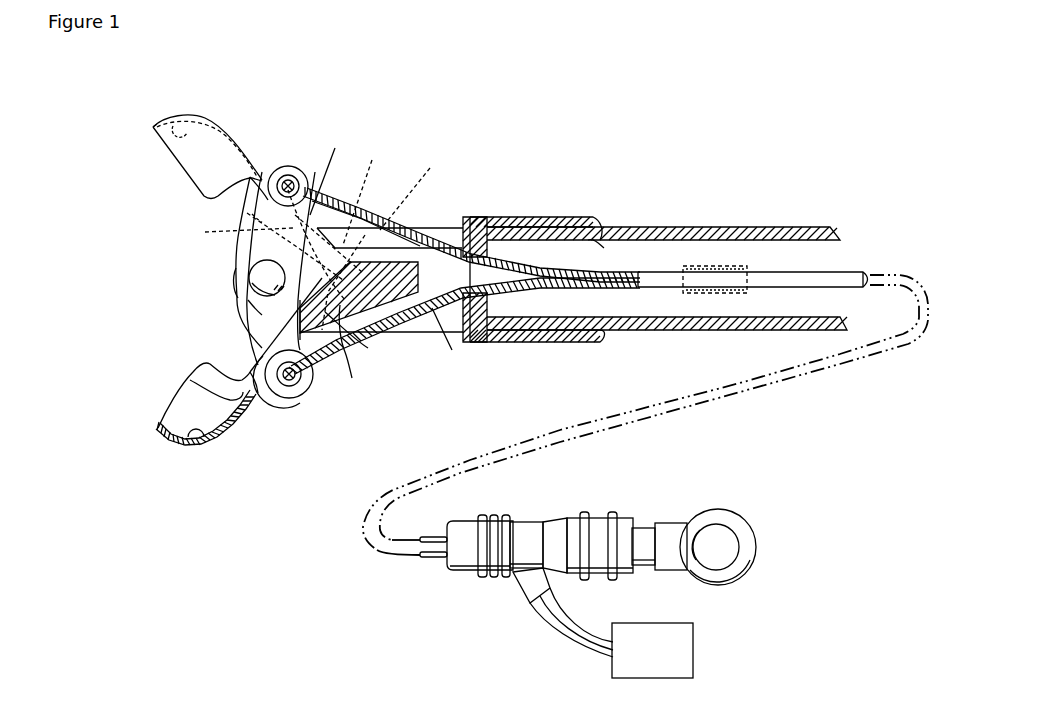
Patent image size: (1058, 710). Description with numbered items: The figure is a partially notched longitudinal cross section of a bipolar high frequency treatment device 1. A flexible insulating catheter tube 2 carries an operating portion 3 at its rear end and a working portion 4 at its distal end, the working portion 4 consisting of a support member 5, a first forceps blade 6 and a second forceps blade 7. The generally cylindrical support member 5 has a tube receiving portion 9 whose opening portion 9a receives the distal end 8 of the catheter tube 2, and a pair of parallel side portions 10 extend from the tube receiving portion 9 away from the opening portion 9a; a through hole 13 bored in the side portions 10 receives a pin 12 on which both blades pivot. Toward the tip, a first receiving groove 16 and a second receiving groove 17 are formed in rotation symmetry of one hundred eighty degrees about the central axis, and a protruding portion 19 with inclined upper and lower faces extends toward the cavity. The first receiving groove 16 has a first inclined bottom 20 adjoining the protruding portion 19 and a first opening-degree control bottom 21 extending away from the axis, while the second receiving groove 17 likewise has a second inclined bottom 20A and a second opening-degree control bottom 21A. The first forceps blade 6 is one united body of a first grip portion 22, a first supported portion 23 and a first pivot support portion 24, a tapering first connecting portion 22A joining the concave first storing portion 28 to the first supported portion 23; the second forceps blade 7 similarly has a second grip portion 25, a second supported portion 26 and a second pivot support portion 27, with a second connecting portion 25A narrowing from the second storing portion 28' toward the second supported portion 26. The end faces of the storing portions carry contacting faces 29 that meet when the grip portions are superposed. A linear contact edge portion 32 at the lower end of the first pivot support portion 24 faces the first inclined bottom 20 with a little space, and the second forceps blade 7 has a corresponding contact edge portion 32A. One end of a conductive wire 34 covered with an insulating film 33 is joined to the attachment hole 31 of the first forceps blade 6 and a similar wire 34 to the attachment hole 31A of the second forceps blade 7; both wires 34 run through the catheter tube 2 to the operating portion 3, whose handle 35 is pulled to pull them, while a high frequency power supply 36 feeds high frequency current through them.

The bipolar high frequency treatment device 1 is at (312, 511).
The catheter tube 2 is at (700, 218).
The operating portion 3 is at (588, 563).
The working portion 4 is at (398, 170).
The support member 5 is at (550, 246).
The first forceps blade 6 is at (189, 435).
The second forceps blade 7 is at (176, 270).
The distal end 8 is at (524, 217).
The tube receiving portion 9 is at (557, 218).
The opening portion 9a is at (598, 240).
The side portions 10 is at (452, 322).
The pin 12 is at (255, 290).
The through hole 13 is at (255, 310).
The first receiving groove 16 is at (352, 380).
The second receiving groove 17 is at (340, 237).
The protruding portion 19 is at (452, 350).
The first inclined bottom 20 is at (393, 300).
The second inclined bottom 20A is at (368, 348).
The first opening-degree control bottom 21 is at (275, 330).
The second opening-degree control bottom 21A is at (264, 246).
The first grip portion 22 is at (170, 444).
The first connecting portion 22A is at (258, 393).
The first supported portion 23 is at (240, 272).
The first pivot support portion 24 is at (258, 180).
The second grip portion 25 is at (222, 121).
The second connecting portion 25A is at (250, 196).
The second supported portion 26 is at (232, 283).
The second pivot support portion 27 is at (291, 402).
The first storing portion 28 is at (206, 442).
The second storing portion 28' is at (207, 132).
The contacting face 29 is at (162, 143).
The attachment hole 31 is at (298, 180).
The attachment hole 31A is at (300, 390).
The contact edge portion 32 is at (313, 193).
The contact edge portion 32A is at (386, 198).
The insulating film 33 is at (462, 218).
The wire 34 is at (430, 238).
The handle 35 is at (718, 511).
The high frequency power supply 36 is at (693, 640).